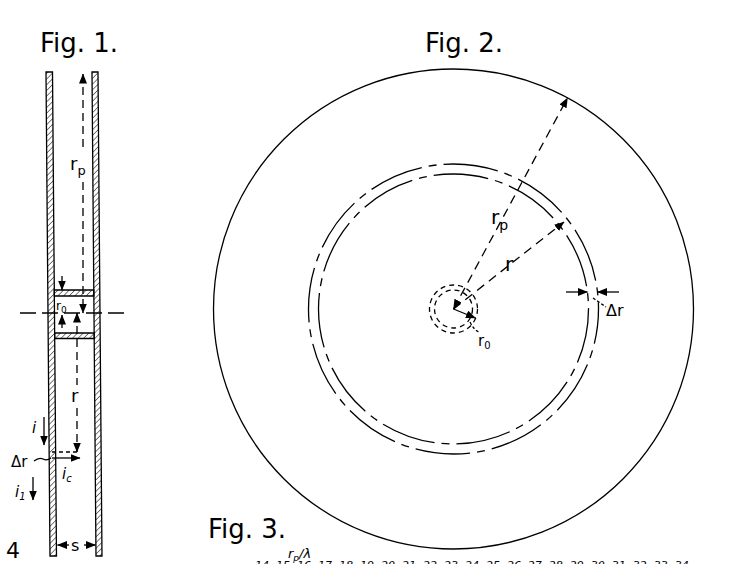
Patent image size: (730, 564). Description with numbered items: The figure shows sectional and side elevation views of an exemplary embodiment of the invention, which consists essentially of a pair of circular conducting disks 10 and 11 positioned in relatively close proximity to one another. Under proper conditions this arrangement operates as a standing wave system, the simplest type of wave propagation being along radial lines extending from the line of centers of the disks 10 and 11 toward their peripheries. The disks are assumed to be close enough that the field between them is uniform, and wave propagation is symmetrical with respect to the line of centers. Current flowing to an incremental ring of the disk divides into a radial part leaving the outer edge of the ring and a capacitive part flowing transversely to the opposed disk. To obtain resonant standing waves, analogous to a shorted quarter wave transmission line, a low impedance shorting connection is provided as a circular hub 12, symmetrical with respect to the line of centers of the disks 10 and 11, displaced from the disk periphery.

In FIG. 1, the circular conducting disk 10 is at (46, 118).
In FIG. 1, the circular conducting disk 11 is at (98, 118).
In FIG. 2, the circular conducting disk 11 is at (314, 122).
In FIG. 1, the circular hub 12 is at (98, 333).
In FIG. 2, the circular hub 12 is at (437, 324).